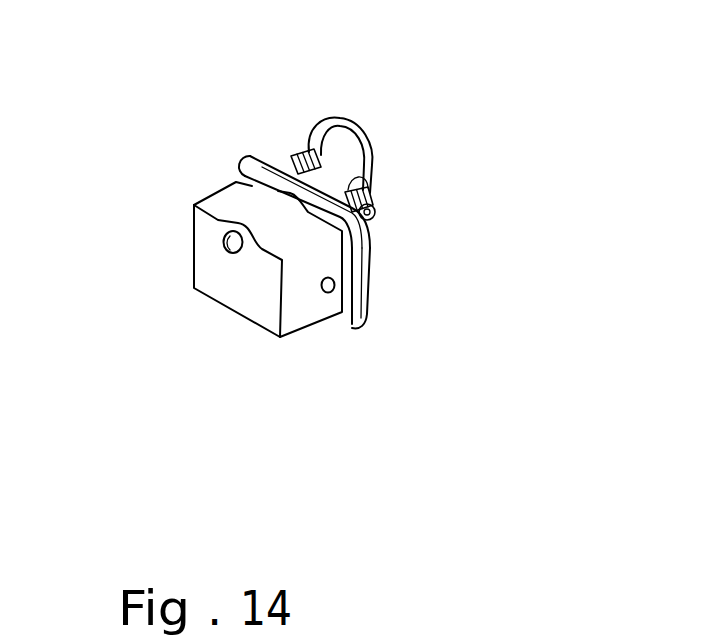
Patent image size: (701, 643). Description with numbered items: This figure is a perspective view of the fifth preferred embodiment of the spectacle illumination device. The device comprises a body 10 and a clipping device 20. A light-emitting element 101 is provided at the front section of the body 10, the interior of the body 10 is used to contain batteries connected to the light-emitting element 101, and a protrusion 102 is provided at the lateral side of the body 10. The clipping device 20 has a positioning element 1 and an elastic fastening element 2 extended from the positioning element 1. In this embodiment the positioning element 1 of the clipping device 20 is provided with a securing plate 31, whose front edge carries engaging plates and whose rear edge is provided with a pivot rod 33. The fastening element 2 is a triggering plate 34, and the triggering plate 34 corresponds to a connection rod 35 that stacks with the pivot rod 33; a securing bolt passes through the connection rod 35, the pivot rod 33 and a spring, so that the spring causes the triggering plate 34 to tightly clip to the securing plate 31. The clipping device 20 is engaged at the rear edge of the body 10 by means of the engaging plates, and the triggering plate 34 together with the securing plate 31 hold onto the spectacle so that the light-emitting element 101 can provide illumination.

The positioning element 1 is at (243, 162).
The fastening element 2 is at (382, 170).
The body 10 is at (209, 186).
The clipping device 20 is at (298, 142).
The securing plate 31 is at (342, 322).
The pivot rod 33 is at (285, 151).
The triggering plate 34 is at (377, 138).
The connection rod 35 is at (352, 120).
The light-emitting element 101 is at (224, 246).
The protrusion 102 is at (327, 293).